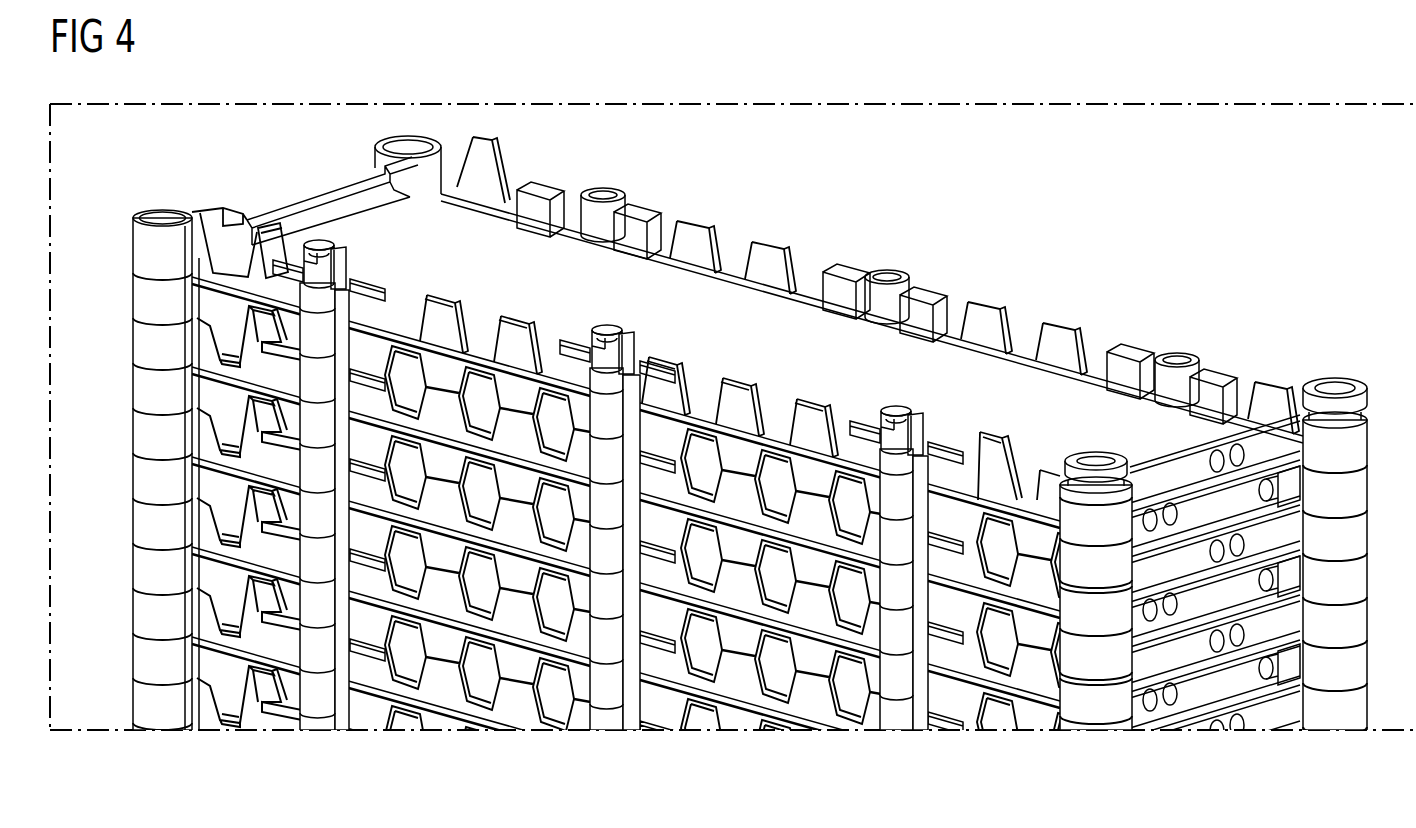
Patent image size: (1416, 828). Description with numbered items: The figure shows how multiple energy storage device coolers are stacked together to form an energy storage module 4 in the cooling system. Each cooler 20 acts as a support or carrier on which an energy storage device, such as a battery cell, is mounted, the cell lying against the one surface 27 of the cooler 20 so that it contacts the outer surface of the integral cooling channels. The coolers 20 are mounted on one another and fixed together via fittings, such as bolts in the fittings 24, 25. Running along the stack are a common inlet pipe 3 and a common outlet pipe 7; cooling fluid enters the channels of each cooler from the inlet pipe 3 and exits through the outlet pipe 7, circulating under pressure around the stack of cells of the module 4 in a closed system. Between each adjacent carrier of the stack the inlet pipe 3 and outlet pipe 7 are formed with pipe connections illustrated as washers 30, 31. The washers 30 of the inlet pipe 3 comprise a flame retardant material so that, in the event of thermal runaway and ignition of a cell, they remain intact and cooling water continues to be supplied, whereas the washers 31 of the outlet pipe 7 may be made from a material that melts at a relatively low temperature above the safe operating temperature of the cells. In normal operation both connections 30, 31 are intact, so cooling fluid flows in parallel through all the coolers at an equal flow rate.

The common inlet pipe 3 is at (1096, 457).
The energy storage module 4 is at (118, 409).
The common outlet pipe 7 is at (1337, 378).
The cooler 20 is at (318, 198).
The fitting 24 is at (340, 252).
The fitting 25 is at (1180, 357).
The surface of the cooler 27 is at (648, 268).
The washer 30 is at (1066, 470).
The washer 31 is at (1363, 400).